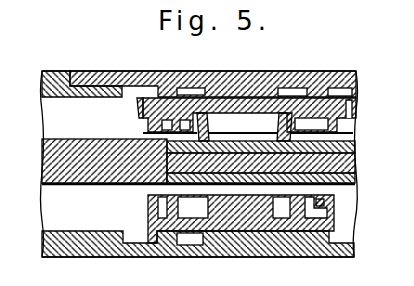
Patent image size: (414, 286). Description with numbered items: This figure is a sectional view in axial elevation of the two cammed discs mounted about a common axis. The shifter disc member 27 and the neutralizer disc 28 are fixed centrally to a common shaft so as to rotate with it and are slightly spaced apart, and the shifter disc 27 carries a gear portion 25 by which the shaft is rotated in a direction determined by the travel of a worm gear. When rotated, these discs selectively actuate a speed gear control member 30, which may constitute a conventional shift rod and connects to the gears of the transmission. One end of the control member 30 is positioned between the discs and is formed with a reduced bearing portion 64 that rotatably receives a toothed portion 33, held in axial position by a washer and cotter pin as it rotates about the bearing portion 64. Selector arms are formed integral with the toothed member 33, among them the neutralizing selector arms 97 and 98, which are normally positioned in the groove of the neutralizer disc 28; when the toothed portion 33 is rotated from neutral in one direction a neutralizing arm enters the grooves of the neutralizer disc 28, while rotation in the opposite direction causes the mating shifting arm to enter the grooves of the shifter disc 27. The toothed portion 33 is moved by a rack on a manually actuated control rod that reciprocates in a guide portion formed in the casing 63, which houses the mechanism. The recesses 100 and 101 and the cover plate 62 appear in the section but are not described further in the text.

The gear portion 25 is at (137, 106).
The shifter disc member 27 is at (335, 225).
The neutralizer disc 28 is at (336, 108).
The speed gear control member 30 is at (75, 176).
The toothed portion 33 is at (357, 143).
The cover plate 62 is at (318, 80).
The casing 63 is at (310, 250).
The reduced bearing portion 64 is at (355, 166).
The selector arm 97 is at (206, 117).
The selector arm 98 is at (279, 119).
The recess 100 is at (200, 92).
The recess 101 is at (188, 244).